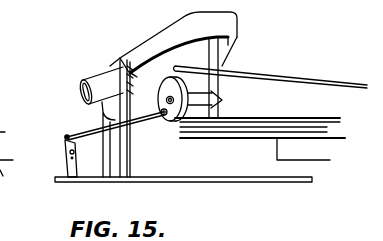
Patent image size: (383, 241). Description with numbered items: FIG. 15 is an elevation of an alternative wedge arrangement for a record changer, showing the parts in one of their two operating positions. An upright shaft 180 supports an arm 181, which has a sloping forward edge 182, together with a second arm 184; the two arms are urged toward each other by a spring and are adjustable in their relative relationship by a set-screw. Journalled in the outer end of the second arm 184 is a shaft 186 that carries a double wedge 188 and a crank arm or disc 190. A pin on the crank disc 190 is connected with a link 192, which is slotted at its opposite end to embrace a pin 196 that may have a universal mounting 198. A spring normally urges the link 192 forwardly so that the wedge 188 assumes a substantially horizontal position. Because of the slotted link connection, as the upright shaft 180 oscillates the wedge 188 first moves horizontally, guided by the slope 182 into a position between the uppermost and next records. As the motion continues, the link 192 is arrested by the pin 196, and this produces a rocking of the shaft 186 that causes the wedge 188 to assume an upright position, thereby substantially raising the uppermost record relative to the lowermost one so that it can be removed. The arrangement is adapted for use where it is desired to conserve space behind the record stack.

The upright shaft 180 is at (127, 168).
The arm 181 is at (177, 24).
The sloping forward edge 182 is at (229, 52).
The second arm 184 is at (117, 116).
The shaft 186 is at (169, 97).
The double wedge 188 is at (220, 101).
The crank arm or disc 190 is at (165, 116).
The link 192 is at (80, 132).
The pin 196 is at (64, 137).
The universal mounting 198 is at (70, 160).